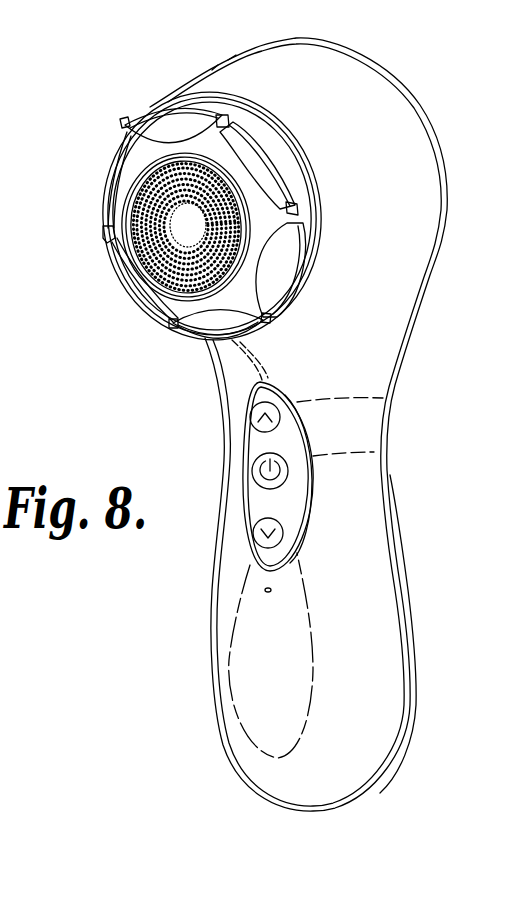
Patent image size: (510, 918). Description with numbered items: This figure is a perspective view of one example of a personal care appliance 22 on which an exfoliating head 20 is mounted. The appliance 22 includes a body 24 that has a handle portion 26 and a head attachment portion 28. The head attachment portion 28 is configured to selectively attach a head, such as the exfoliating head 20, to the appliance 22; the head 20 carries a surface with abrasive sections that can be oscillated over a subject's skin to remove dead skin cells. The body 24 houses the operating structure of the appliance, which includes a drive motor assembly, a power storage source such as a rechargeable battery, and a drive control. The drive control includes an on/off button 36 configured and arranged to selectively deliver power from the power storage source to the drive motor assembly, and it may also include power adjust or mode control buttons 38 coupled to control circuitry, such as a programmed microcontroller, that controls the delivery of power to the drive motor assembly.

The exfoliating head 20 is at (121, 191).
The personal care appliance 22 is at (434, 122).
The body 24 is at (386, 511).
The handle portion 26 is at (413, 632).
The head attachment portion 28 is at (177, 95).
The on/off button 36 is at (258, 464).
The power adjust or mode control buttons 38 is at (257, 414).